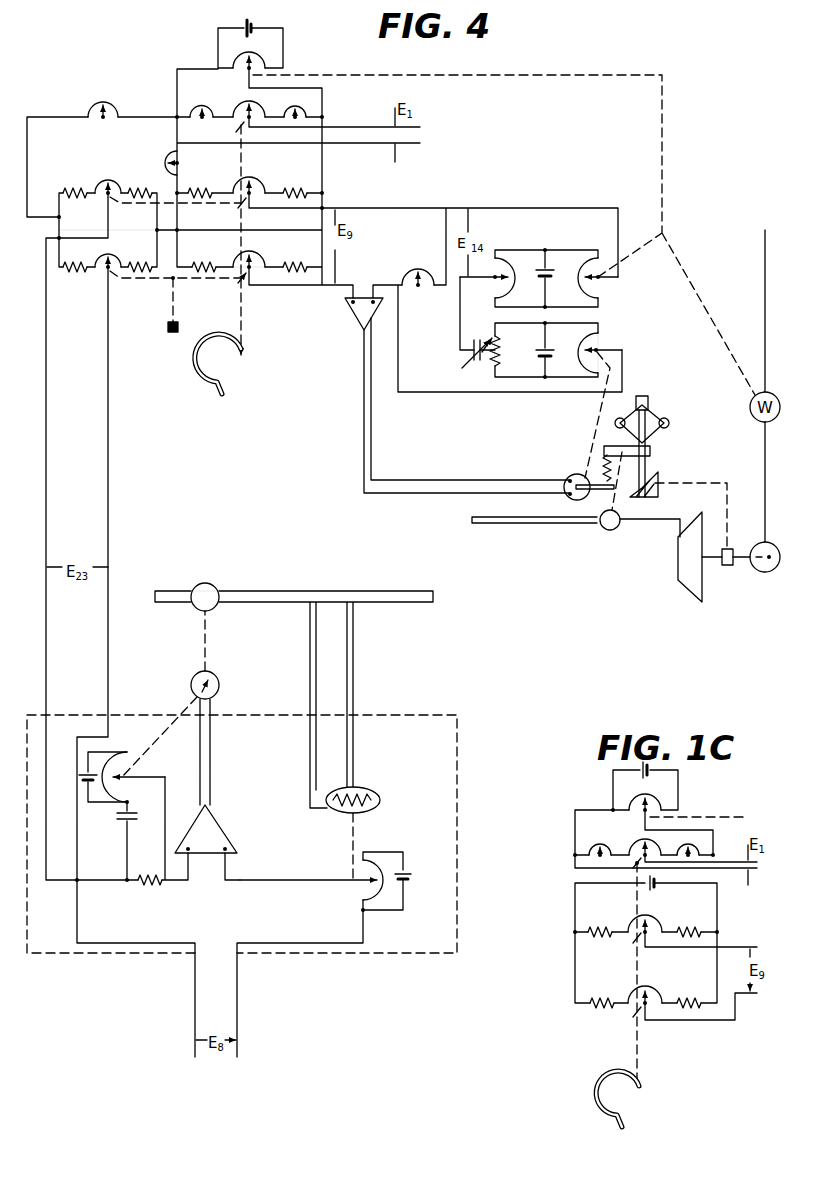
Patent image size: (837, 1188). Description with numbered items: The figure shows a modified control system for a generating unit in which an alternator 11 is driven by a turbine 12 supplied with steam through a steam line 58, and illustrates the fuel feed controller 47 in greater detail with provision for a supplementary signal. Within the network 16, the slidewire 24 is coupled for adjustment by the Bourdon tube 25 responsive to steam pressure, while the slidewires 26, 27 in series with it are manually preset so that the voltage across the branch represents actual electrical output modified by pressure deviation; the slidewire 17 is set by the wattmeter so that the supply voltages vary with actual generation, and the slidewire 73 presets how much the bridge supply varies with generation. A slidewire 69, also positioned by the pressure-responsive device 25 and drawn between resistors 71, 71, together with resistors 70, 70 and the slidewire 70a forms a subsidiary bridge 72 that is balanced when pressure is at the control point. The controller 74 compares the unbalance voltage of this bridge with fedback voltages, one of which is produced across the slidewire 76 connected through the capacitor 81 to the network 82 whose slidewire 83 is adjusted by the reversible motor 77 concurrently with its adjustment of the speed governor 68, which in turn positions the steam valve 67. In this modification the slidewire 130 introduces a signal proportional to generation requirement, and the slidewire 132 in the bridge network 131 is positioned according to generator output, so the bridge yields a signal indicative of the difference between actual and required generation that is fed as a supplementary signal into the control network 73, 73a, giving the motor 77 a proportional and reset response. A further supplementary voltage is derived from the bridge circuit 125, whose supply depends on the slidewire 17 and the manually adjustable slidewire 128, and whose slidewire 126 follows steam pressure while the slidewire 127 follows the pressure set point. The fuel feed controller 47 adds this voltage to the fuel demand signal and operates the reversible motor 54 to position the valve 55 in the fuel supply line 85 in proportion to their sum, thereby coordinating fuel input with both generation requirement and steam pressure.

In FIG. 4, the slidewire 17 is at (277, 60).
In FIG. 1C, the slidewire 17 is at (663, 808).
In FIG. 4, the manually adjustable slidewire 128 is at (118, 103).
In FIG. 4, the slidewire 26 is at (207, 107).
In FIG. 1C, the slidewire 26 is at (612, 847).
In FIG. 4, the slidewire 24 is at (249, 110).
In FIG. 1C, the slidewire 24 is at (663, 840).
In FIG. 4, the slidewire 27 is at (307, 108).
In FIG. 1C, the slidewire 27 is at (706, 847).
In FIG. 4, the slidewire 73 is at (148, 154).
In FIG. 4, the slidewire 126 is at (100, 186).
In FIG. 4, the network 16 is at (231, 172).
In FIG. 1C, the network 16 is at (568, 834).
In FIG. 4, the slidewire 69 is at (263, 181).
In FIG. 1C, the slidewire 69 is at (655, 914).
In FIG. 4, the resistor 71 is at (198, 195).
In FIG. 1C, the resistor 71 is at (690, 929).
In FIG. 4, the bridge circuit 125 is at (152, 232).
In FIG. 4, the subsidiary bridge 72 is at (227, 257).
In FIG. 1C, the subsidiary bridge 72 is at (619, 977).
In FIG. 4, the slidewire 70a is at (260, 251).
In FIG. 1C, the slidewire 70a is at (655, 986).
In FIG. 4, the resistors 70 is at (212, 270).
In FIG. 1C, the resistors 70 is at (606, 1003).
In FIG. 4, the slidewire 127 is at (113, 257).
In FIG. 4, the Bourdon tube 25 is at (198, 364).
In FIG. 1C, the Bourdon tube 25 is at (606, 1107).
In FIG. 4, the controller 74 is at (349, 314).
In FIG. 4, the slidewire 76 is at (411, 274).
In FIG. 4, the control network 73a is at (442, 237).
In FIG. 4, the slidewire 130 is at (505, 259).
In FIG. 4, the slidewire 132 is at (587, 254).
In FIG. 4, the bridge network 131 is at (574, 304).
In FIG. 4, the network 82 is at (574, 349).
In FIG. 4, the capacitor 81 is at (467, 355).
In FIG. 4, the slidewire 83 is at (590, 344).
In FIG. 4, the reversible motor 77 is at (572, 476).
In FIG. 4, the speed governor 68 is at (711, 452).
In FIG. 4, the steam line 58 is at (500, 526).
In FIG. 4, the steam valve 67 is at (610, 530).
In FIG. 4, the turbine 12 is at (693, 576).
In FIG. 4, the alternator 11 is at (767, 572).
In FIG. 4, the valve 55 is at (212, 583).
In FIG. 4, the fuel supply line 85 is at (296, 591).
In FIG. 4, the reversible motor 54 is at (216, 680).
In FIG. 4, the fuel feed controller 47 is at (445, 897).